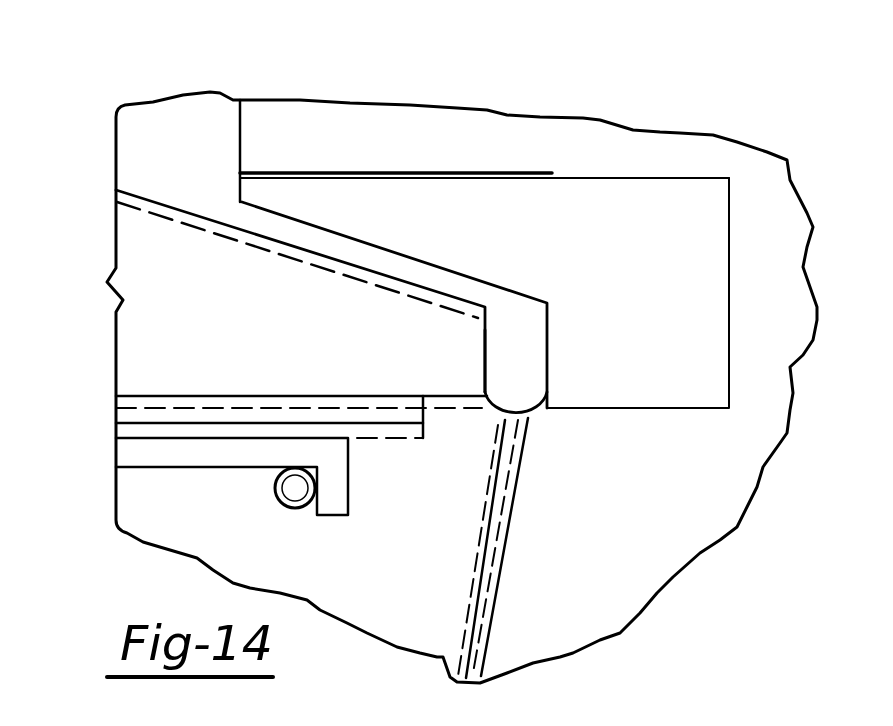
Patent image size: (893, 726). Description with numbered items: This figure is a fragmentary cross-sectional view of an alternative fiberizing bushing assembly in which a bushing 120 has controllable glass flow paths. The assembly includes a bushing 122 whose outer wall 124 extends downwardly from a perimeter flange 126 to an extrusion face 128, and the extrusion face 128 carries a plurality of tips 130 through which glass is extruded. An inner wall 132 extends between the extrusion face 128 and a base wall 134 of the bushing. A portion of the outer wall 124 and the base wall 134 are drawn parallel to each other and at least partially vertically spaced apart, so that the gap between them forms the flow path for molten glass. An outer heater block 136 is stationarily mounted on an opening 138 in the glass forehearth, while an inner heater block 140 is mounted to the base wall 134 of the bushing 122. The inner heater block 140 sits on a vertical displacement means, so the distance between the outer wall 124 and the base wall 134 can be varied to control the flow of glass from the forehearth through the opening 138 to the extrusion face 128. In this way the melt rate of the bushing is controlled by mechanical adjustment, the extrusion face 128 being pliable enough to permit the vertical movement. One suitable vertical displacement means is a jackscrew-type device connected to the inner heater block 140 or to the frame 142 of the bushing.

The bushing 120 is at (500, 142).
The bushing 122 is at (248, 172).
The outer wall 124 is at (427, 265).
The perimeter flange 126 is at (353, 173).
The extrusion face 128 is at (541, 411).
The tips 130 is at (505, 422).
The inner wall 132 is at (485, 357).
The base wall 134 is at (348, 266).
The outer heater block 136 is at (708, 305).
The opening 138 is at (333, 74).
The inner heater block 140 is at (177, 378).
The frame 142 is at (330, 502).